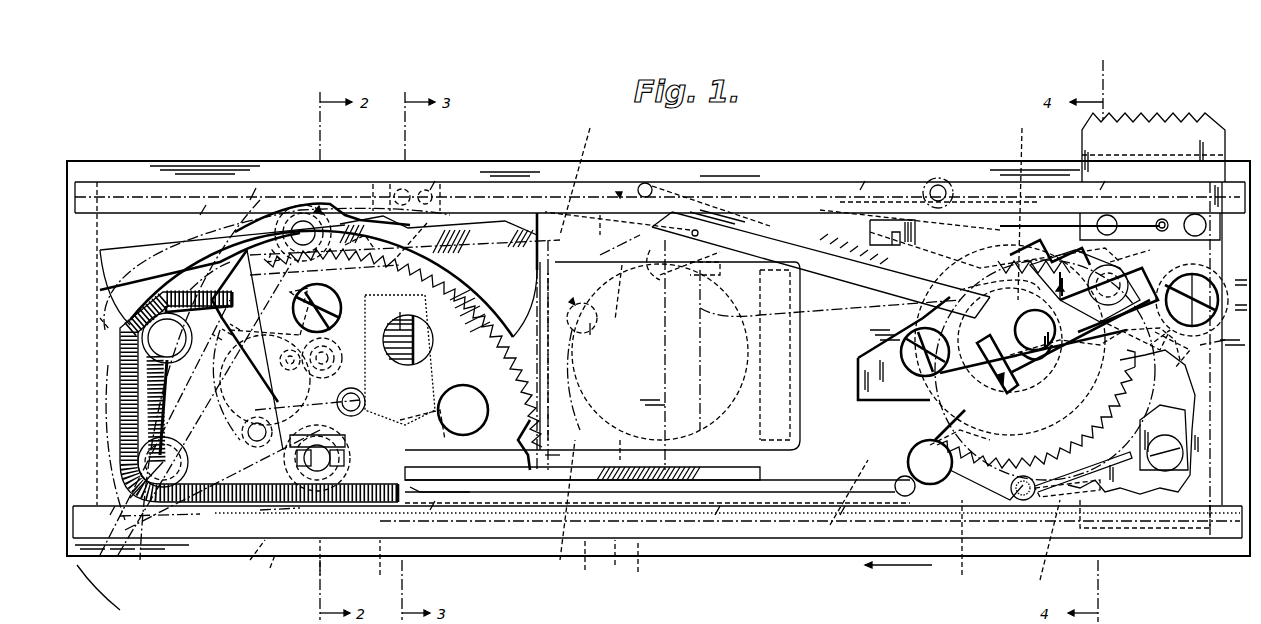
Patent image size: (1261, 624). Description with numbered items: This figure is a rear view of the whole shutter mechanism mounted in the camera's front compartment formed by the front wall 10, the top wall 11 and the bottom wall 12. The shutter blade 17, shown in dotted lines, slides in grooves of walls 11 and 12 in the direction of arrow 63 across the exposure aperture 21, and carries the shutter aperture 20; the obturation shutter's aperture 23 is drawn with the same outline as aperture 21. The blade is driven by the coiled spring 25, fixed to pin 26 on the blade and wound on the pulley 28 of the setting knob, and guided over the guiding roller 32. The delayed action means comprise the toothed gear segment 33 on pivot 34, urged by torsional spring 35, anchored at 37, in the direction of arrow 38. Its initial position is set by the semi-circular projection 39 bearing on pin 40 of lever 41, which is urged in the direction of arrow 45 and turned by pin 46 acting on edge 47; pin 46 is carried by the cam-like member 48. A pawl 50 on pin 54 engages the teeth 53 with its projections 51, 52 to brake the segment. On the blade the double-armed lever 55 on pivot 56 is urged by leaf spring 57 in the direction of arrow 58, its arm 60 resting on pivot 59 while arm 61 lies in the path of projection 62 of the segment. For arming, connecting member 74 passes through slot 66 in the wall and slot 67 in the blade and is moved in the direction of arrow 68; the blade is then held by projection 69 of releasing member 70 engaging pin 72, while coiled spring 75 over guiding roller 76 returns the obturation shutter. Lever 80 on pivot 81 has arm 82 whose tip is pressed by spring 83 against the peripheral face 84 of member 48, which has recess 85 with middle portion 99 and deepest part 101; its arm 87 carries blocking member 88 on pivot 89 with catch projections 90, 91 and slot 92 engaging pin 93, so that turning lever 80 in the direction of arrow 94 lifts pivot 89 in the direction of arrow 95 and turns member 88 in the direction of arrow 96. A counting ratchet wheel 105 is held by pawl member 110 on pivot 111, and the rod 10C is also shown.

The compartment front wall 10 is at (671, 359).
The top wall 11 is at (1230, 206).
The bottom wall 12 is at (1228, 520).
The shutter blade 17 is at (899, 349).
The shutter aperture 20 is at (818, 440).
The exposure aperture 21 is at (598, 430).
The aperture of obturation shutter 23 is at (615, 458).
The coiled spring 25 is at (524, 395).
The pin 26 is at (1020, 500).
The pulley 28 is at (240, 430).
The guiding roller 32 is at (167, 338).
The toothed gear segment 33 is at (470, 178).
The pivot 34 is at (272, 568).
The torsional spring 35 is at (252, 556).
The spring anchoring point 37 is at (329, 561).
The arrow 38 is at (478, 280).
The semi-circular projection 39 is at (366, 406).
The pin 40 is at (235, 450).
The lever 41 is at (195, 243).
The arrow 45 is at (322, 214).
The pin 46 is at (210, 376).
The edge of lever 47 is at (400, 360).
The cam-like member 48 is at (304, 291).
The pawl 50 is at (518, 232).
The projection of pawl 51 is at (260, 250).
The projection of pawl 52 is at (345, 245).
The teeth 53 is at (518, 445).
The pin 54 is at (300, 232).
The double-armed lever 55 is at (588, 320).
The pivot 56 is at (628, 284).
The leaf spring 57 is at (658, 255).
The arrow 58 is at (575, 305).
The pivot of leaf spring 59 is at (728, 248).
The lever arm 60 is at (690, 262).
The lever arm 61 is at (549, 444).
The projection 62 is at (318, 472).
The arrow 63 is at (905, 565).
The slot 66 is at (466, 488).
The slot 67 is at (586, 562).
The arrow 68 is at (637, 563).
The projection 69 is at (1177, 298).
The releasing member 70 is at (1205, 146).
The pin 72 is at (1200, 316).
The connecting member 74 is at (614, 558).
The coiled spring 75 is at (94, 586).
The guiding roller 76 is at (259, 407).
The lever 80 is at (793, 246).
The pivot 81 is at (650, 188).
The lever arm 82 is at (408, 188).
The spring 83 is at (835, 208).
The peripheral face 84 is at (240, 385).
The recess 85 is at (317, 458).
The lever arm 87 is at (945, 300).
The blocking member 88 is at (1110, 372).
The pivot 89 is at (1035, 348).
The catch projection 90 is at (965, 455).
The catch projection 91 is at (303, 222).
The slot 92 is at (1138, 308).
The pin 93 is at (1112, 292).
The arrow 94 is at (622, 200).
The arrow 95 is at (1085, 285).
The arrow 96 is at (1032, 355).
The middle portion 99 is at (295, 354).
The deepest part of recess 101 is at (308, 358).
The ratchet wheel 105 is at (1085, 445).
The pawl member 110 is at (1133, 423).
The pivot 111 is at (1165, 453).
The rod 10C is at (1078, 226).